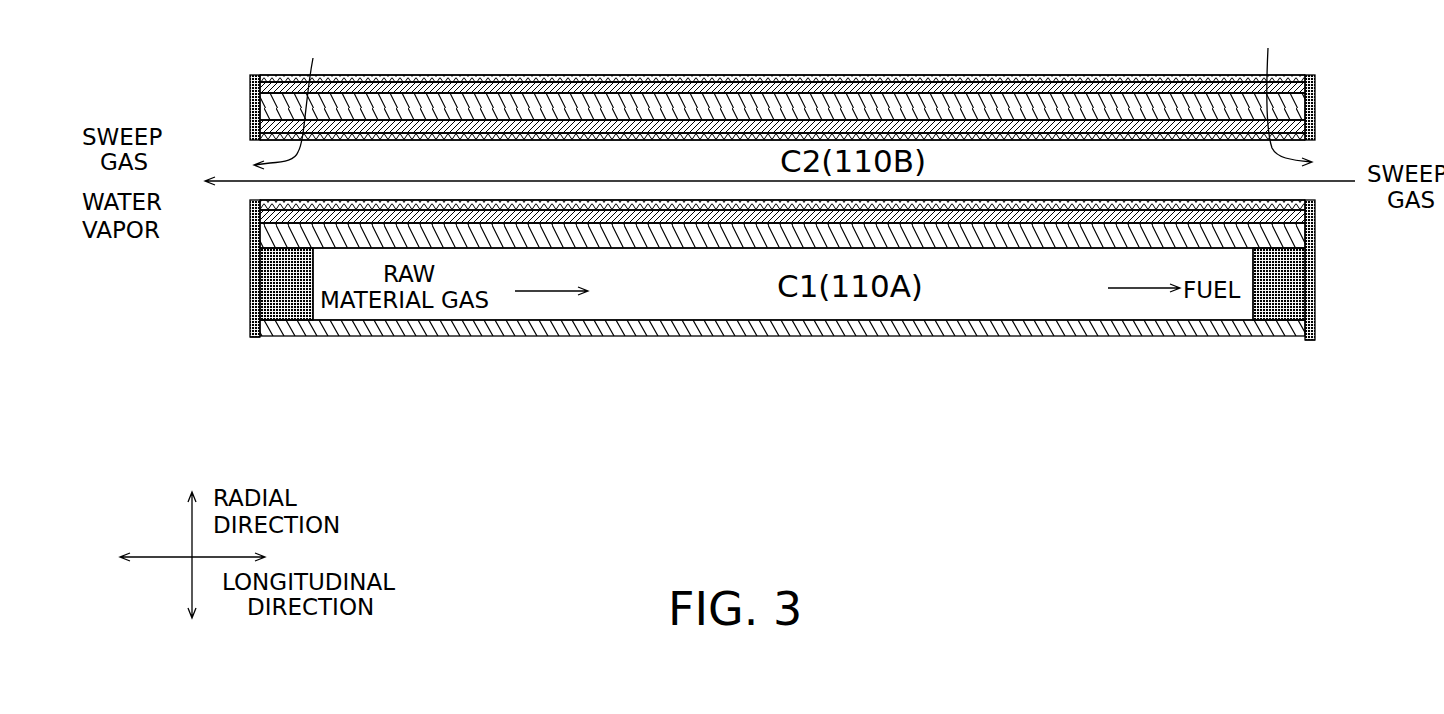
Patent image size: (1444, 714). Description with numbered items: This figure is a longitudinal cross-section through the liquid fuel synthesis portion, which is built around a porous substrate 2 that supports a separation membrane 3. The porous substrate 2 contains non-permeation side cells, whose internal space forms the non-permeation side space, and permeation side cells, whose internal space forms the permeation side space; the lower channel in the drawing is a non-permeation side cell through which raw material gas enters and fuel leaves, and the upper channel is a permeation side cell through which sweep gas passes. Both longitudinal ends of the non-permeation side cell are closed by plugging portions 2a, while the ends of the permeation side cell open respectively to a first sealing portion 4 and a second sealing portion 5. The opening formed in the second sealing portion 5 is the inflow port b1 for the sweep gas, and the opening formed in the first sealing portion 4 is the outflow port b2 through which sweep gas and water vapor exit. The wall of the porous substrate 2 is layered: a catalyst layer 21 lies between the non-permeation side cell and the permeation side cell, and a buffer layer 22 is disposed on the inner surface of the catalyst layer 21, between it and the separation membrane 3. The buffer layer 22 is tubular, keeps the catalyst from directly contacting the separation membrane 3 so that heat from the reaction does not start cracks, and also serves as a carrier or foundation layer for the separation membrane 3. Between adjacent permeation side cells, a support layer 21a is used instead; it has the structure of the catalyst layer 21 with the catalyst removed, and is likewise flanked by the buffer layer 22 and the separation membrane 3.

The porous substrate 2 is at (850, 114).
The catalyst layer 21 is at (1302, 238).
The support layer 21a is at (1315, 105).
The buffer layer 22 is at (1315, 87).
The plugging portion 2a is at (297, 303).
The separation membrane 3 is at (262, 145).
The first sealing portion 4 is at (256, 338).
The second sealing portion 5 is at (1310, 340).
The inflow port b1 is at (1285, 93).
The outflow port b2 is at (296, 99).